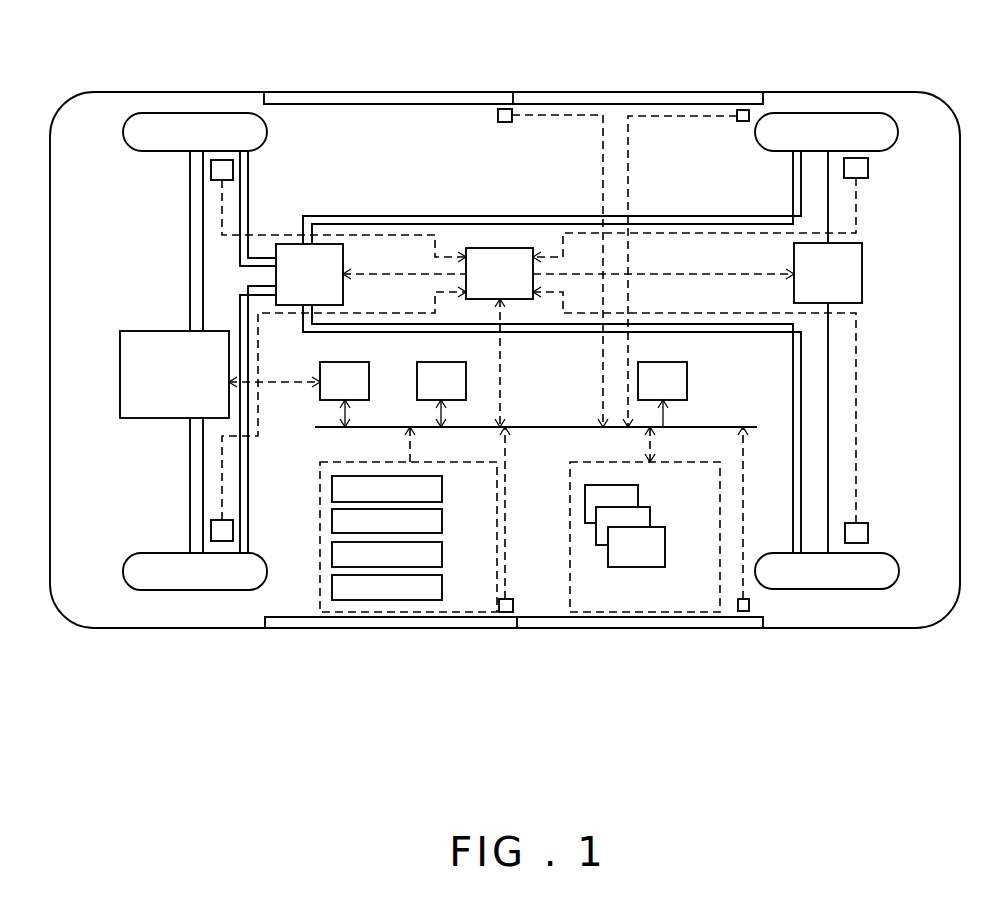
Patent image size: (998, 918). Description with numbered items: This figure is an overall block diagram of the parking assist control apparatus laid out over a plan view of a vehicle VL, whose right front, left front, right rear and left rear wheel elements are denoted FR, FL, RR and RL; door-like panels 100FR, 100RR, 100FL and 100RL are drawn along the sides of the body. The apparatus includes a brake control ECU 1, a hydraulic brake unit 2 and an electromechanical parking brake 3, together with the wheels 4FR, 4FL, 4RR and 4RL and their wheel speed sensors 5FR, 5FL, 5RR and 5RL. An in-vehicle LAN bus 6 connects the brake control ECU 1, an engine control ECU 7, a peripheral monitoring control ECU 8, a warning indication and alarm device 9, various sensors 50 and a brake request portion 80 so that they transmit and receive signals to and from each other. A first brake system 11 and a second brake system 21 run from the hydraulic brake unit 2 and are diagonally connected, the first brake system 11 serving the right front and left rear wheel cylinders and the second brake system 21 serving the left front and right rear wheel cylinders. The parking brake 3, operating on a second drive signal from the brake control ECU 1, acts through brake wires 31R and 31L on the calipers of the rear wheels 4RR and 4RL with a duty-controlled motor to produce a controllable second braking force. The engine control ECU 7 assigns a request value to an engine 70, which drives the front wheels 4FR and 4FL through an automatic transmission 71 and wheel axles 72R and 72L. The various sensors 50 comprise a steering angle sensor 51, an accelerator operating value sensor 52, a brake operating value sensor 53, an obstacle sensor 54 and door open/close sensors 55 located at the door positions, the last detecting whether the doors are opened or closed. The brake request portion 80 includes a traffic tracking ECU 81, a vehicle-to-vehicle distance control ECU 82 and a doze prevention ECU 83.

The vehicle VL is at (570, 90).
The brake control ECU 1 is at (495, 248).
The hydraulic brake unit 2 is at (283, 244).
The electromechanical parking brake 3 is at (862, 254).
The right front wheel 4FR is at (190, 113).
The left front wheel 4FL is at (190, 590).
The right rear wheel 4RR is at (816, 113).
The left rear wheel 4RL is at (818, 589).
The wheel speed sensor 5FR is at (211, 170).
The wheel speed sensor 5FL is at (211, 530).
The wheel speed sensor 5RR is at (868, 168).
The wheel speed sensor 5RL is at (868, 533).
The in-vehicle LAN bus 6 is at (710, 427).
The engine control ECU 7 is at (350, 362).
The peripheral monitoring control ECU 8 is at (435, 362).
The warning indication and alarm device 9 is at (665, 362).
The first brake system 11 is at (250, 164).
The second brake system 21 is at (248, 458).
The brake wire 31R is at (828, 214).
The brake wire 31L is at (828, 468).
The various sensors 50 is at (377, 519).
The steering angle sensor 51 is at (442, 489).
The accelerator operating value sensor 52 is at (442, 521).
The brake operating value sensor 53 is at (442, 554).
The obstacle sensor 54 is at (442, 587).
The door open/close sensor 55 is at (505, 122).
The engine 70 is at (145, 346).
The automatic transmission 71 is at (148, 331).
The wheel axle 72R is at (190, 222).
The wheel axle 72L is at (190, 491).
The brake request portion 80 is at (618, 519).
The traffic tracking ECU 81 is at (638, 497).
The vehicle-to-vehicle distance control ECU 82 is at (650, 519).
The doze prevention ECU 83 is at (665, 541).
The front right body panel 100FR is at (384, 101).
The rear right body panel 100RR is at (679, 101).
The front left body panel 100FL is at (384, 628).
The rear left body panel 100RL is at (667, 628).